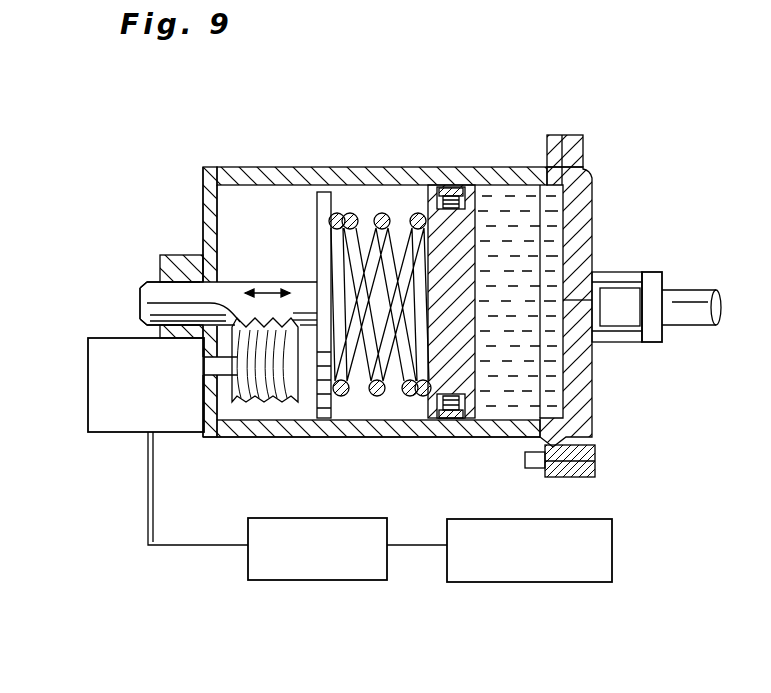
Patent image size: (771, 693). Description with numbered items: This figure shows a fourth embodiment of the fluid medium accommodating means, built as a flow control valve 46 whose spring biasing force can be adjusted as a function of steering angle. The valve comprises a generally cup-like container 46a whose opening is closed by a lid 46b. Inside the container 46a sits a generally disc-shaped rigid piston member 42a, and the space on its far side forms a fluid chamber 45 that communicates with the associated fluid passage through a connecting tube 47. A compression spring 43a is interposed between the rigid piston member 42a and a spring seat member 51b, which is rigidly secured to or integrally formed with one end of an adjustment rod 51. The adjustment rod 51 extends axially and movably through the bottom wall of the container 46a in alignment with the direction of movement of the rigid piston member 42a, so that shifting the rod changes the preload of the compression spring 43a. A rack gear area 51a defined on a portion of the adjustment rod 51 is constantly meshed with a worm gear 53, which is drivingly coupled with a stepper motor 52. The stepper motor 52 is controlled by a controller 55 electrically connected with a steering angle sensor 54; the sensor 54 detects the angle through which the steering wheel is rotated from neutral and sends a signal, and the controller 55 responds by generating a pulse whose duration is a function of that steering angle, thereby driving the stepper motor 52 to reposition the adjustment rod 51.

The flow control valve 46 is at (326, 166).
The container 46a is at (366, 422).
The lid 46b is at (577, 200).
The adjustment rod 51 is at (298, 289).
The rack gear area 51a is at (145, 303).
The spring seat member 51b is at (321, 388).
The worm gear 53 is at (262, 390).
The compression spring 43a is at (383, 216).
The rigid piston member 42a is at (460, 240).
The fluid chamber 45 is at (508, 385).
The connecting tube 47 is at (690, 300).
The stepper motor 52 is at (107, 422).
The controller 55 is at (357, 576).
The steering angle sensor 54 is at (528, 584).